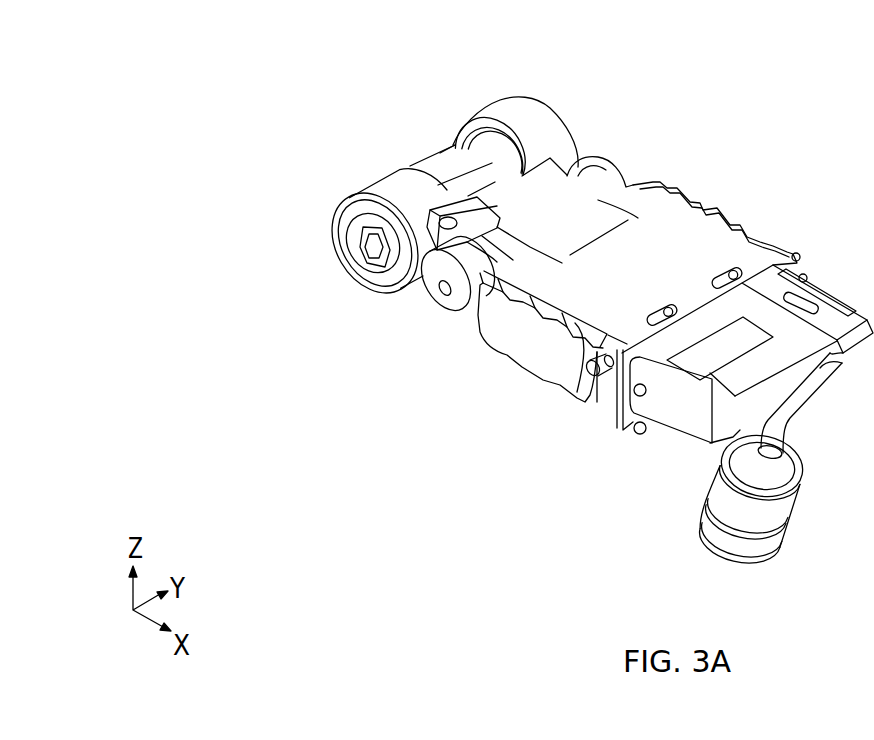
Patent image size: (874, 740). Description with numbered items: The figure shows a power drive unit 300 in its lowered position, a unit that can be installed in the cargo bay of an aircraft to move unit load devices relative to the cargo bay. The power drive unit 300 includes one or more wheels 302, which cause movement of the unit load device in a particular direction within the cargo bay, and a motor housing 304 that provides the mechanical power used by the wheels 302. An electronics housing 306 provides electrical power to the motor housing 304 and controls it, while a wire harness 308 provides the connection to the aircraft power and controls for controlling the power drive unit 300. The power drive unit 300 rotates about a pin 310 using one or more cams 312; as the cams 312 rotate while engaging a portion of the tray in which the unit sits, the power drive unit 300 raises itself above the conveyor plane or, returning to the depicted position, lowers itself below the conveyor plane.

The power drive unit 300 is at (413, 111).
The wheels 302 is at (370, 189).
The motor housing 304 is at (570, 303).
The electronics housing 306 is at (712, 366).
The wire harness 308 is at (708, 527).
The pin 310 is at (597, 372).
The cams 312 is at (607, 168).